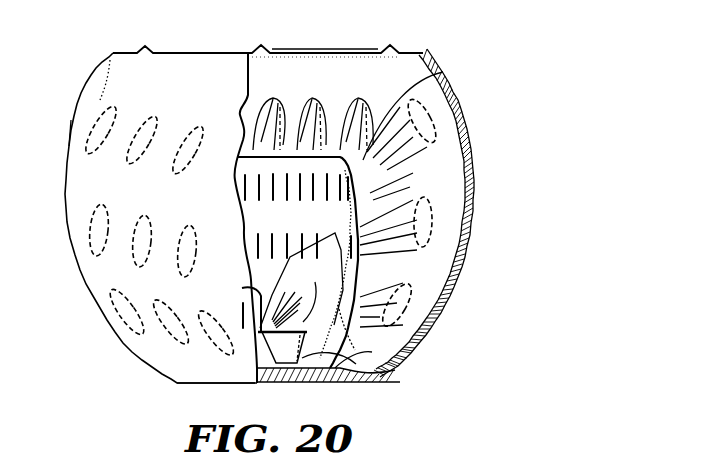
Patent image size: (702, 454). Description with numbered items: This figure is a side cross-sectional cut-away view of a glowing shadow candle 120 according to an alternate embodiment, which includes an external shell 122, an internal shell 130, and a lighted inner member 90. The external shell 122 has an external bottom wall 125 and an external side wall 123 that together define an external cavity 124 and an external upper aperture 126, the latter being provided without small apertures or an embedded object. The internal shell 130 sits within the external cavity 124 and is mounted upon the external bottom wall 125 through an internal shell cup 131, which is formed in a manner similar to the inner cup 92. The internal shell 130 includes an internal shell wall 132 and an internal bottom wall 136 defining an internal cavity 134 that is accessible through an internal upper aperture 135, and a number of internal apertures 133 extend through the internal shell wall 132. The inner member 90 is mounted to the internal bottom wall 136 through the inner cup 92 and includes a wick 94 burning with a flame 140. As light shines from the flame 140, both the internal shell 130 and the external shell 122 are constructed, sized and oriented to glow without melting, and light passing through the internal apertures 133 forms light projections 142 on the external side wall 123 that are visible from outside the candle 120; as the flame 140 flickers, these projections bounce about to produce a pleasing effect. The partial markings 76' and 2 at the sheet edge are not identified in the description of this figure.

The glowing shadow candle 120 is at (69, 77).
The external shell 122 is at (106, 68).
The external side wall 123 is at (70, 133).
The external cavity 124 is at (279, 68).
The external bottom wall 125 is at (254, 384).
The external upper aperture 126 is at (328, 52).
The internal shell 130 is at (324, 150).
The internal shell cup 131 is at (360, 384).
The internal shell wall 132 is at (440, 72).
The internal apertures 133 is at (385, 185).
The internal cavity 134 is at (397, 368).
The internal upper aperture 135 is at (243, 160).
The internal bottom wall 136 is at (290, 376).
The flame 140 is at (242, 289).
The light projections 142 is at (142, 252).
The inner member 90 is at (363, 380).
The inner cup 92 is at (317, 377).
The wick 94 is at (301, 280).
The housing 76' is at (10, 236).
The reference 2 is at (3, 404).